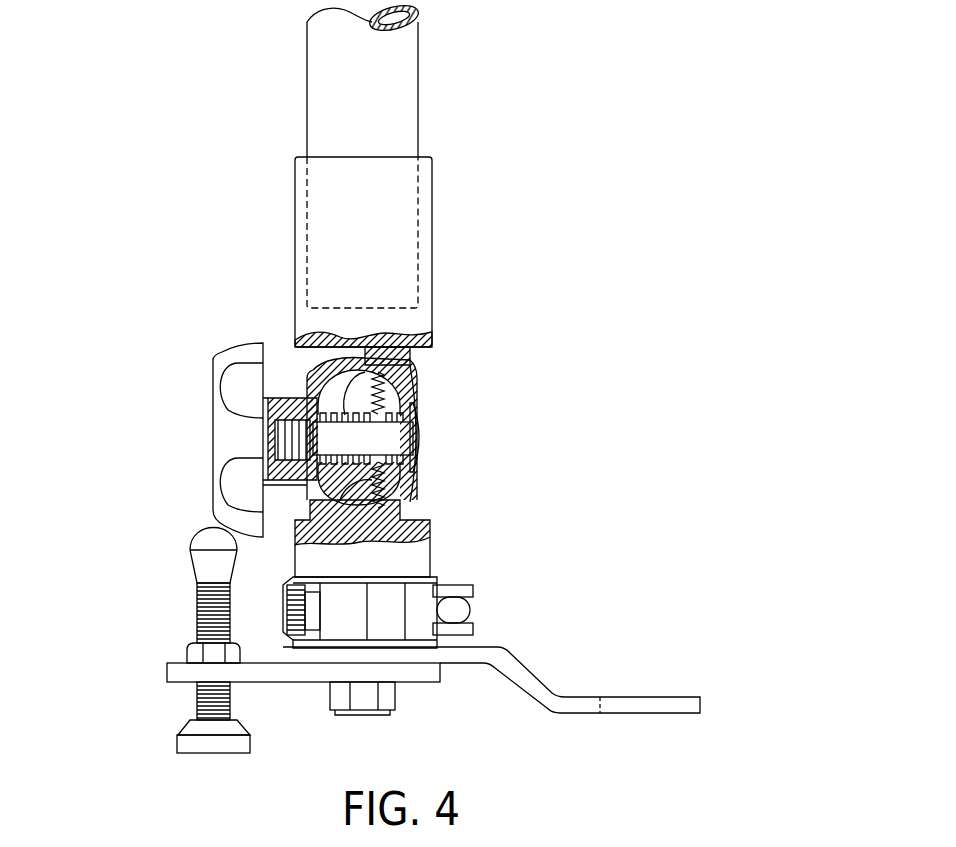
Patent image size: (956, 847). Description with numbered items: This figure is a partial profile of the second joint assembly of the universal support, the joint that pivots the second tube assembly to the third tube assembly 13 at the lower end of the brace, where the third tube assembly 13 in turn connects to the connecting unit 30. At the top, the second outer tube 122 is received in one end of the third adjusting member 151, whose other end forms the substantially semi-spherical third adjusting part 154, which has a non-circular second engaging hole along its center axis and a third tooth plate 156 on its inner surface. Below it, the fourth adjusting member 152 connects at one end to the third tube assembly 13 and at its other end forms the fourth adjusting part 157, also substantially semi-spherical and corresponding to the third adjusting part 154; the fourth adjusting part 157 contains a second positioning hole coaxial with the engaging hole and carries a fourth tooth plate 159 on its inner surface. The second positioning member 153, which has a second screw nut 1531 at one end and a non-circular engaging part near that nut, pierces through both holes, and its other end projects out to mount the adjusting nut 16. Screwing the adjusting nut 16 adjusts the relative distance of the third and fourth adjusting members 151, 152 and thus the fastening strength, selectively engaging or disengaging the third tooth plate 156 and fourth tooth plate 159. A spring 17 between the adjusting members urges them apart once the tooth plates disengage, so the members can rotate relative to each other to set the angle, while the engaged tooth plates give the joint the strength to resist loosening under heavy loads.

The second outer tube 122 is at (402, 118).
The third adjusting member 151 is at (418, 318).
The spring 17 is at (432, 347).
The third adjusting part 154 is at (420, 385).
The second positioning member 153 is at (402, 432).
The second screw nut 1531 is at (415, 448).
The third tooth plate 156 is at (378, 488).
The fourth adjusting member 152 is at (412, 548).
The fourth adjusting part 157 is at (318, 378).
The fourth tooth plate 159 is at (370, 483).
The adjusting nut 16 is at (227, 443).
The third tube assembly 13 is at (505, 578).
The connecting unit 30 is at (148, 662).